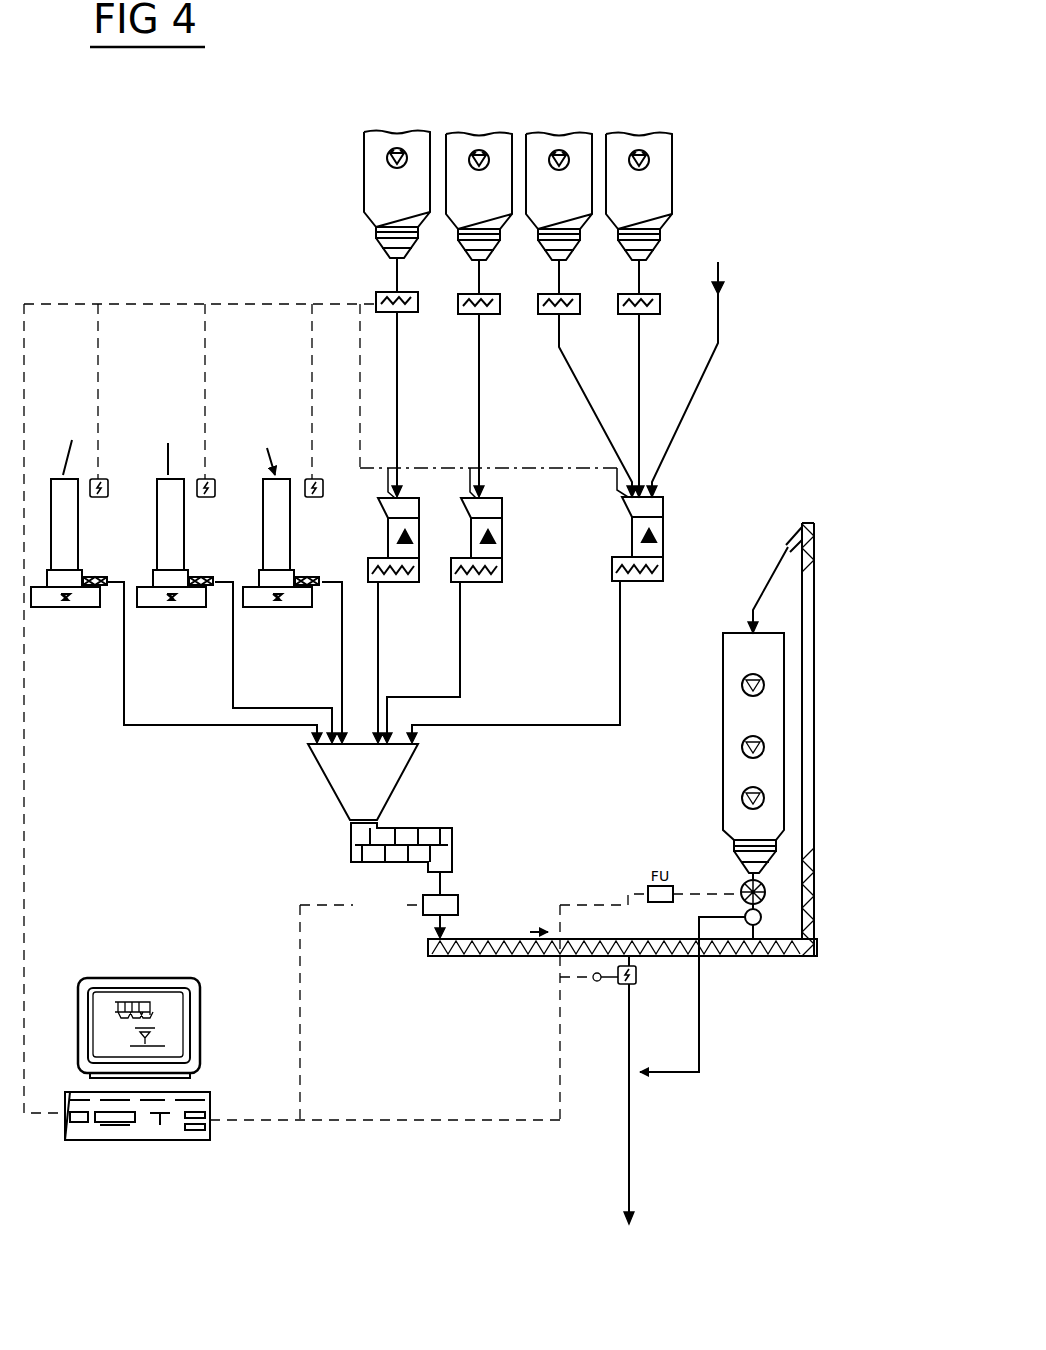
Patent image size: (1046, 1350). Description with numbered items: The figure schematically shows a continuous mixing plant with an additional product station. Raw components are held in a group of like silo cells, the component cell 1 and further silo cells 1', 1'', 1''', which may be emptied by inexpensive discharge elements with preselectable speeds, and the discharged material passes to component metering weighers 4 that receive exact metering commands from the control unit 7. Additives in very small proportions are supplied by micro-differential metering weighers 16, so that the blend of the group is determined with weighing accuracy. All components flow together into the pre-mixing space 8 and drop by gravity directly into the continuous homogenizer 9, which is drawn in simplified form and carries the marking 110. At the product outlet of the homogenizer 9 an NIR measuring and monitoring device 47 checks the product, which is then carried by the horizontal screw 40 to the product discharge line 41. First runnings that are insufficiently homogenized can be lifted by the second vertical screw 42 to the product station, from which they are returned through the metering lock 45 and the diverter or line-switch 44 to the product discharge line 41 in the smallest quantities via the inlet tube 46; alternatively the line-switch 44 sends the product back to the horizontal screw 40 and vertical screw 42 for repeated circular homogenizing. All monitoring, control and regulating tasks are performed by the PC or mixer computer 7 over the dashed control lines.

The component cell 1 is at (403, 195).
The second component cell 1' is at (559, 195).
The silo cell 1'' is at (638, 195).
The silo cell 1''' is at (694, 358).
The component metering weigher 4 is at (425, 491).
The control unit 7 is at (173, 977).
The pre-mixing space 8 is at (322, 783).
The homogenizer 9 is at (403, 828).
The micro-differential metering weigher 16 is at (70, 543).
The horizontal screw 40 is at (497, 958).
The product discharge line 41 is at (630, 1093).
The second vertical screw 42 is at (812, 723).
The diverter or line-switch 44 is at (765, 917).
The metering lock 45 is at (767, 768).
The inlet tube 46 is at (700, 1020).
The NIR measuring and monitoring device 47 is at (455, 892).
The material designation 110 is at (722, 745).